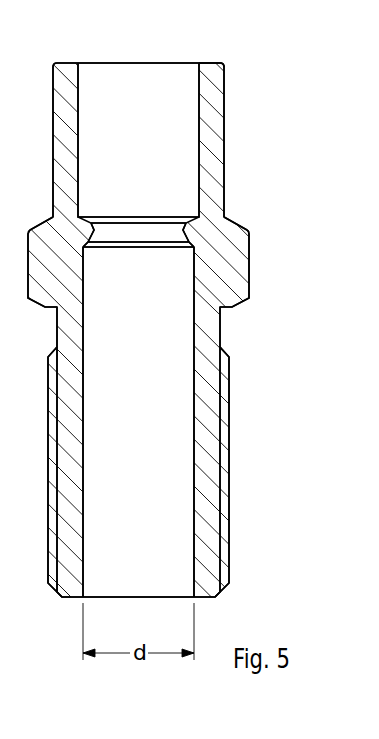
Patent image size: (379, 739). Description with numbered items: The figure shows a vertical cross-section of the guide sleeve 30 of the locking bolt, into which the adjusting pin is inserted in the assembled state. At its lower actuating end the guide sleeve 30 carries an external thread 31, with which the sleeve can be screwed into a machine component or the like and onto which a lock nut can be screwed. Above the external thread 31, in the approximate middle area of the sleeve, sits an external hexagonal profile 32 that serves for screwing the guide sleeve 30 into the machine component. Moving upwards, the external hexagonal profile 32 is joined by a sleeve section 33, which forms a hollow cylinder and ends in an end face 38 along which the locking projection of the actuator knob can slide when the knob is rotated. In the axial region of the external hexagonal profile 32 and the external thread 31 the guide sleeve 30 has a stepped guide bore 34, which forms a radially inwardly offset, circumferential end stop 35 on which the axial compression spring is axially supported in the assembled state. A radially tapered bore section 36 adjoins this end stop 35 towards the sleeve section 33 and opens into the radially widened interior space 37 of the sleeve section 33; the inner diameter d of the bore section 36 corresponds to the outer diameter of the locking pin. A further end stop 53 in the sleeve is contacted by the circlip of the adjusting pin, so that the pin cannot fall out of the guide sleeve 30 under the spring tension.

The guide sleeve 30 is at (278, 237).
The external thread 31 is at (228, 447).
The external hexagonal profile 32 is at (238, 283).
The sleeve section 33 is at (213, 138).
The guide bore 34 is at (183, 437).
The end stop 35 is at (188, 247).
The bore section 36 is at (167, 247).
The interior space 37 is at (197, 95).
The end face 38 is at (211, 63).
The end stop 53 is at (187, 222).